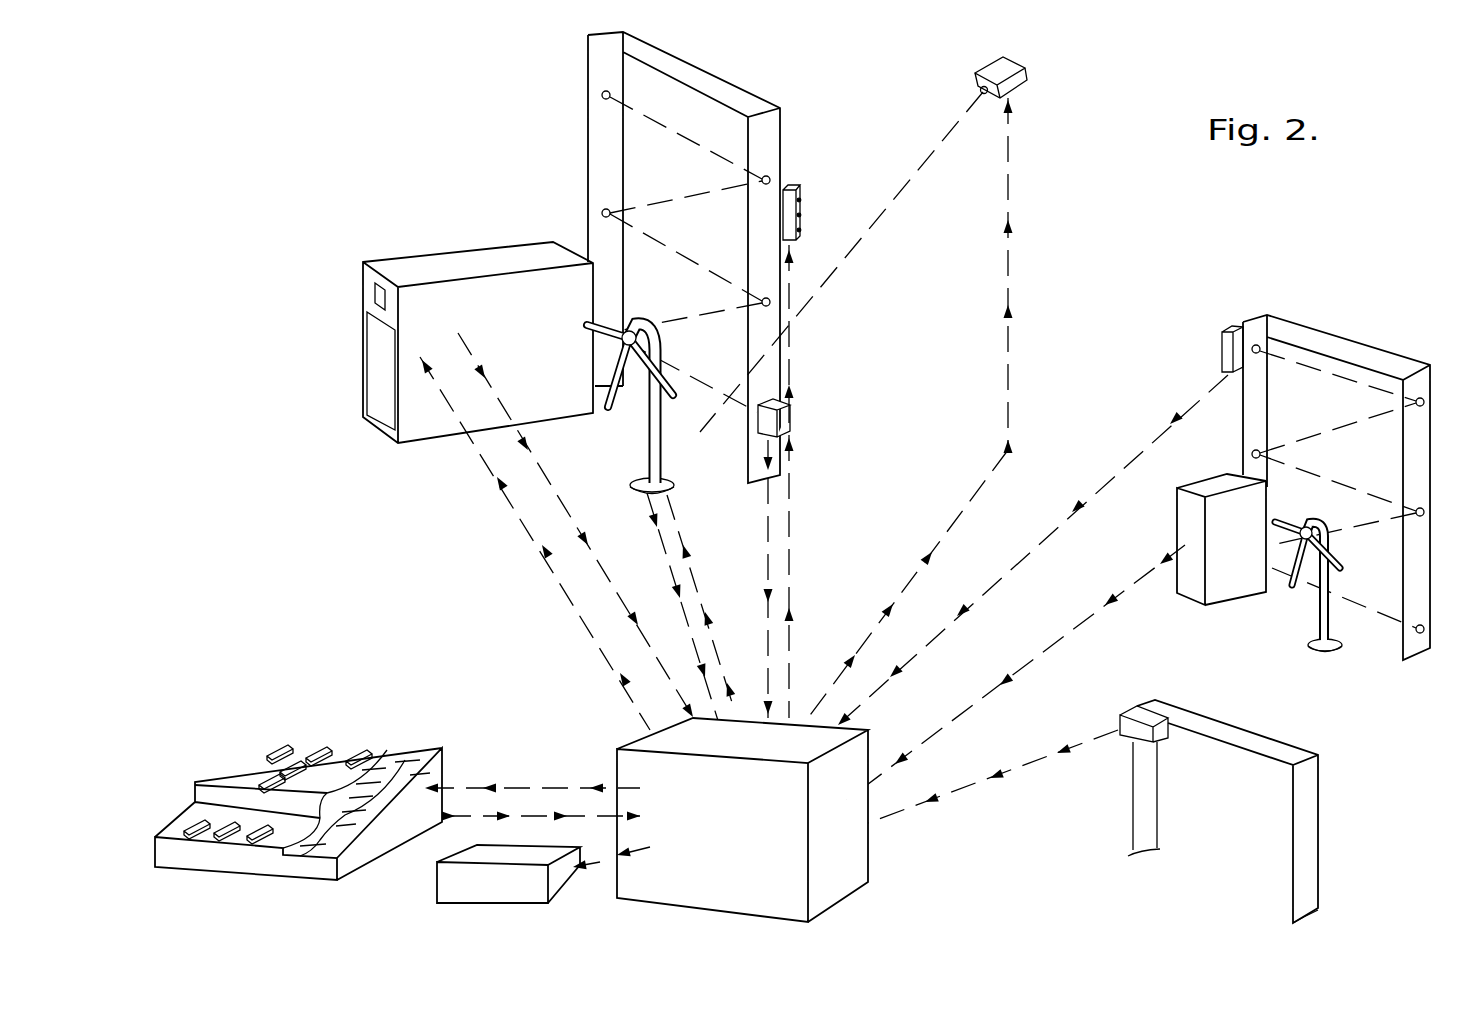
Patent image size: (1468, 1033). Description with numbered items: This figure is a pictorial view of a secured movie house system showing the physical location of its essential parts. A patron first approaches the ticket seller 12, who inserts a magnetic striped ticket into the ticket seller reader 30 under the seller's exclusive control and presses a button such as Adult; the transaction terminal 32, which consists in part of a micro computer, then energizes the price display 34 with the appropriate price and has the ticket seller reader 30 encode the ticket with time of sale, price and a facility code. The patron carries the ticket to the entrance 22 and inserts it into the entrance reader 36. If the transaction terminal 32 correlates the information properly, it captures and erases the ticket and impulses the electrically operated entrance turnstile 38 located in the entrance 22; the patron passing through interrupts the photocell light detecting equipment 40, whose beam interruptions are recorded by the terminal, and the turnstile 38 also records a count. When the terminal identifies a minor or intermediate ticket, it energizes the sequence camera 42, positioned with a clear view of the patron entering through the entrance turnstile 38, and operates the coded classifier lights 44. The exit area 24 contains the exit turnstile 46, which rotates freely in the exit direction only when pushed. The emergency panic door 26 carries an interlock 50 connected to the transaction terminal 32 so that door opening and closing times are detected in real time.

The ticket seller 12 is at (345, 708).
The entrance 22 is at (562, 141).
The exit area 24 is at (1349, 317).
The emergency panic door 26 is at (1147, 884).
The ticket seller reader 30 is at (198, 780).
The transaction terminal 32 is at (868, 875).
The price display 34 is at (578, 878).
The entrance reader 36 is at (420, 258).
The entrance turnstile 38 is at (647, 462).
The photocell light detecting equipment 40 is at (790, 413).
The sequence camera 42 is at (1010, 66).
The classifier lights 44 is at (800, 200).
The exit turnstile 46 is at (1190, 522).
The interlock 50 is at (1122, 717).